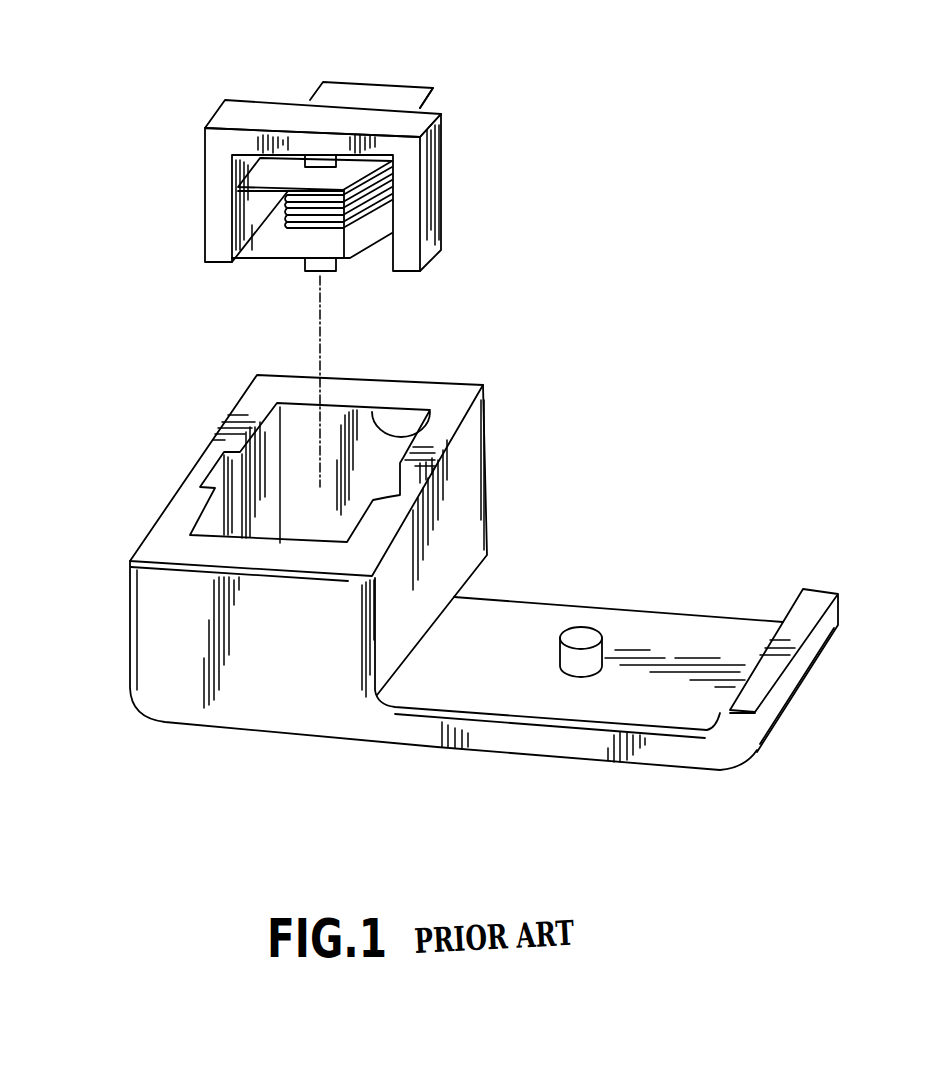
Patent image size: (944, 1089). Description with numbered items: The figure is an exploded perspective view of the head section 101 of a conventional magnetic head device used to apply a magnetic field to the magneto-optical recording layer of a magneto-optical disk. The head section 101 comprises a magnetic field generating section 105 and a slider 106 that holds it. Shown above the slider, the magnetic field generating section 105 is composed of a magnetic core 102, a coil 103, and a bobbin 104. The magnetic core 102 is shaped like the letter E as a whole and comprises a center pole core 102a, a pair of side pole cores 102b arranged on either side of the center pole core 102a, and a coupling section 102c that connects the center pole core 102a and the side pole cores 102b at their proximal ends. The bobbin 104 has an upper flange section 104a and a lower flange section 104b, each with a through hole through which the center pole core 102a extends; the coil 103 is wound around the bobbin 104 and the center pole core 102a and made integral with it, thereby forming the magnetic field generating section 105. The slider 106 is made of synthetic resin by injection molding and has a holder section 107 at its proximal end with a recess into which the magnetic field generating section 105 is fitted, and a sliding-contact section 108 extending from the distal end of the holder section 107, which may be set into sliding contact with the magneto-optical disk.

The head section 101 is at (441, 421).
The magnetic core 102 is at (326, 183).
The center pole core 102a is at (271, 243).
The side pole cores 102b is at (322, 192).
The coupling section 102c is at (323, 86).
The coil 103 is at (325, 238).
The bobbin 104 is at (412, 60).
The upper flange section 104a is at (460, 71).
The lower flange section 104b is at (261, 248).
The magnetic field generating section 105 is at (326, 250).
The slider 106 is at (441, 602).
The holder section 107 is at (406, 473).
The sliding-contact section 108 is at (616, 709).